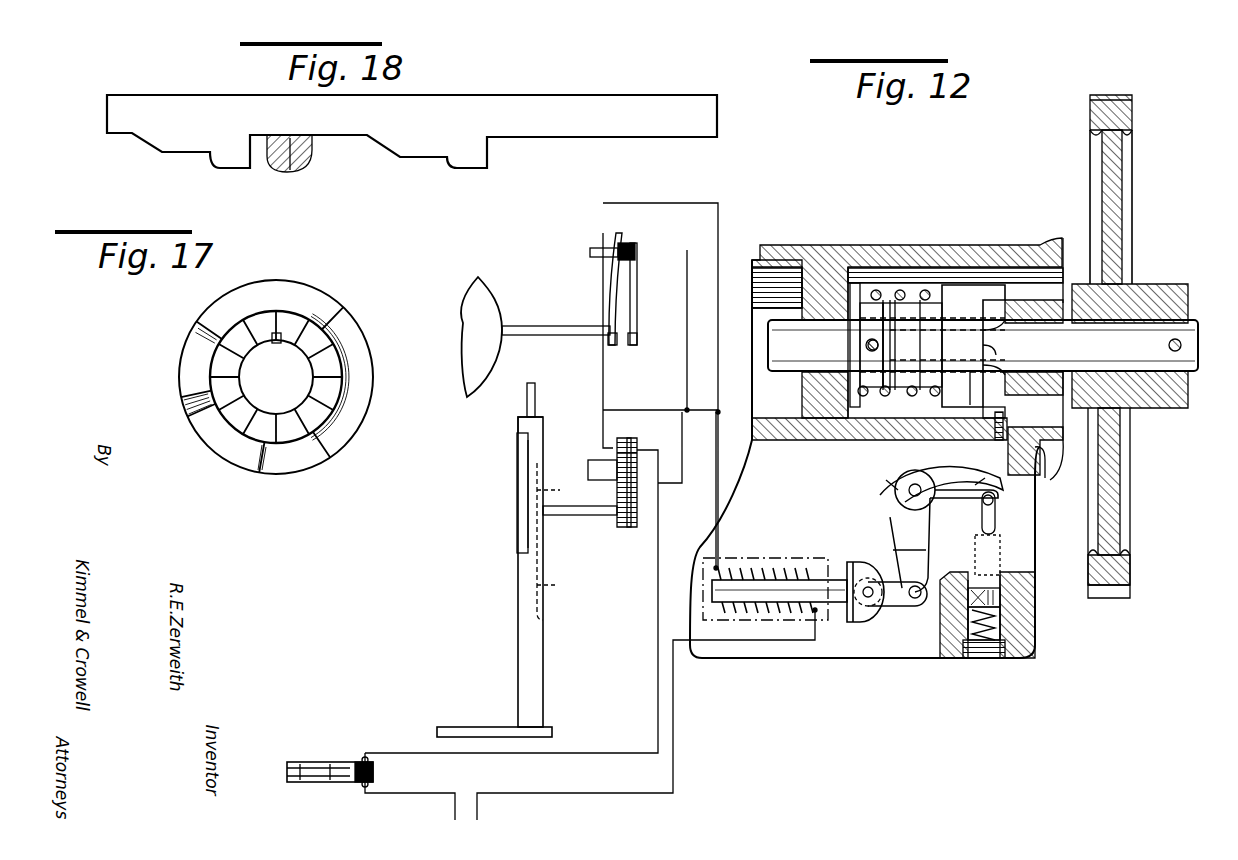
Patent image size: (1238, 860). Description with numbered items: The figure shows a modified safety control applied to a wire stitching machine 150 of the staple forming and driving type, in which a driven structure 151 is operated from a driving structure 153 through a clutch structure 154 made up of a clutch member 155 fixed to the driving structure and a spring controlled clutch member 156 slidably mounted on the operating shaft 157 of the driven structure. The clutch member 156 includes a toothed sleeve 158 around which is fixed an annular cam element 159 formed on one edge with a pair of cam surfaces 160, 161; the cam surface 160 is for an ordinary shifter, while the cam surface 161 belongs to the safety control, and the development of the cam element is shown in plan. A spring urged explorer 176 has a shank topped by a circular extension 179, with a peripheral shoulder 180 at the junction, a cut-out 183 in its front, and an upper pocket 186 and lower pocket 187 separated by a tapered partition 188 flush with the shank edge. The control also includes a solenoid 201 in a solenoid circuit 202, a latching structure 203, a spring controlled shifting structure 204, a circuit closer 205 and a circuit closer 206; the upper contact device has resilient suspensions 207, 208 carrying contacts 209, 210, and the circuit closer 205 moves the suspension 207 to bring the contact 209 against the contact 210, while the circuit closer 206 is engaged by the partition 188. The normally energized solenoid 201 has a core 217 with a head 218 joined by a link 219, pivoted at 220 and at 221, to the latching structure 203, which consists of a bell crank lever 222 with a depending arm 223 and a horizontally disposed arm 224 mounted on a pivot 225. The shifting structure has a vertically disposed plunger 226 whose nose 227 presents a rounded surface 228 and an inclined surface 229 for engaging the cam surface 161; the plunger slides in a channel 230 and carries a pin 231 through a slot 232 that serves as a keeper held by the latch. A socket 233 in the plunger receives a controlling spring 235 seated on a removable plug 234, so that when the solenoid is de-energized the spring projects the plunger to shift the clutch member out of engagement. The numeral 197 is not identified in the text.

In FIG. 12, the wire stitching machine 150 is at (900, 238).
In FIG. 12, the driven structure 151 is at (792, 307).
In FIG. 12, the driving structure 153 is at (1143, 240).
In FIG. 12, the clutch structure 154 is at (1053, 395).
In FIG. 12, the clutch member 155 is at (1050, 241).
In FIG. 17, the spring controlled clutch member 156 is at (355, 393).
In FIG. 12, the spring controlled clutch member 156 is at (1012, 291).
In FIG. 12, the operating shaft 157 is at (797, 345).
In FIG. 12, the sleeve 158 is at (933, 312).
In FIG. 18, the annular cam element 159 is at (537, 106).
In FIG. 17, the annular cam element 159 is at (349, 302).
In FIG. 12, the annular cam element 159 is at (963, 290).
In FIG. 18, the cam surface 160 is at (183, 153).
In FIG. 17, the cam surface 160 is at (190, 380).
In FIG. 12, the cam surface 160 is at (970, 376).
In FIG. 18, the cam surface 161 is at (410, 160).
In FIG. 17, the cam surface 161 is at (290, 460).
In FIG. 12, the cam surface 161 is at (974, 343).
In FIG. 12, the spring urged explorer 176 is at (543, 690).
In FIG. 12, the extension 179 is at (527, 398).
In FIG. 12, the peripheral shoulder 180 is at (520, 420).
In FIG. 12, the cut-out 183 is at (522, 520).
In FIG. 12, the upper pocket 186 is at (555, 489).
In FIG. 12, the lower pocket 187 is at (556, 582).
In FIG. 12, the tapered partition 188 is at (540, 512).
In FIG. 12, the arm 197 is at (500, 517).
In FIG. 12, the solenoid 201 is at (760, 544).
In FIG. 12, the solenoid circuit 202 is at (658, 600).
In FIG. 12, the latching structure 203 is at (896, 517).
In FIG. 12, the spring controlled shifting structure 204 is at (1000, 468).
In FIG. 12, the circuit closer 205 is at (556, 325).
In FIG. 12, the circuit closer 206 is at (592, 516).
In FIG. 12, the resilient suspension 207 is at (613, 276).
In FIG. 12, the resilient suspension 208 is at (637, 288).
In FIG. 12, the contact 209 is at (612, 345).
In FIG. 12, the contact 210 is at (631, 345).
In FIG. 12, the core 217 is at (828, 590).
In FIG. 12, the head 218 is at (865, 628).
In FIG. 12, the link 219 is at (897, 606).
In FIG. 12, the pivot 220 is at (868, 585).
In FIG. 12, the pivot 221 is at (925, 588).
In FIG. 12, the bell crank lever 222 is at (896, 472).
In FIG. 12, the depending arm 223 is at (905, 546).
In FIG. 12, the horizontally disposed arm 224 is at (957, 498).
In FIG. 12, the pivot 225 is at (914, 468).
In FIG. 12, the plunger 226 is at (1005, 592).
In FIG. 18, the nose 227 is at (297, 163).
In FIG. 12, the nose 227 is at (1000, 430).
In FIG. 18, the rounded surface 228 is at (283, 172).
In FIG. 18, the inclined surface 229 is at (308, 140).
In FIG. 12, the inclined surface 229 is at (905, 434).
In FIG. 12, the channel 230 is at (1002, 620).
In FIG. 12, the pin 231 is at (993, 498).
In FIG. 12, the slot 232 is at (995, 516).
In FIG. 12, the socket 233 is at (975, 618).
In FIG. 12, the removable plug 234 is at (992, 656).
In FIG. 12, the controlling spring 235 is at (985, 630).